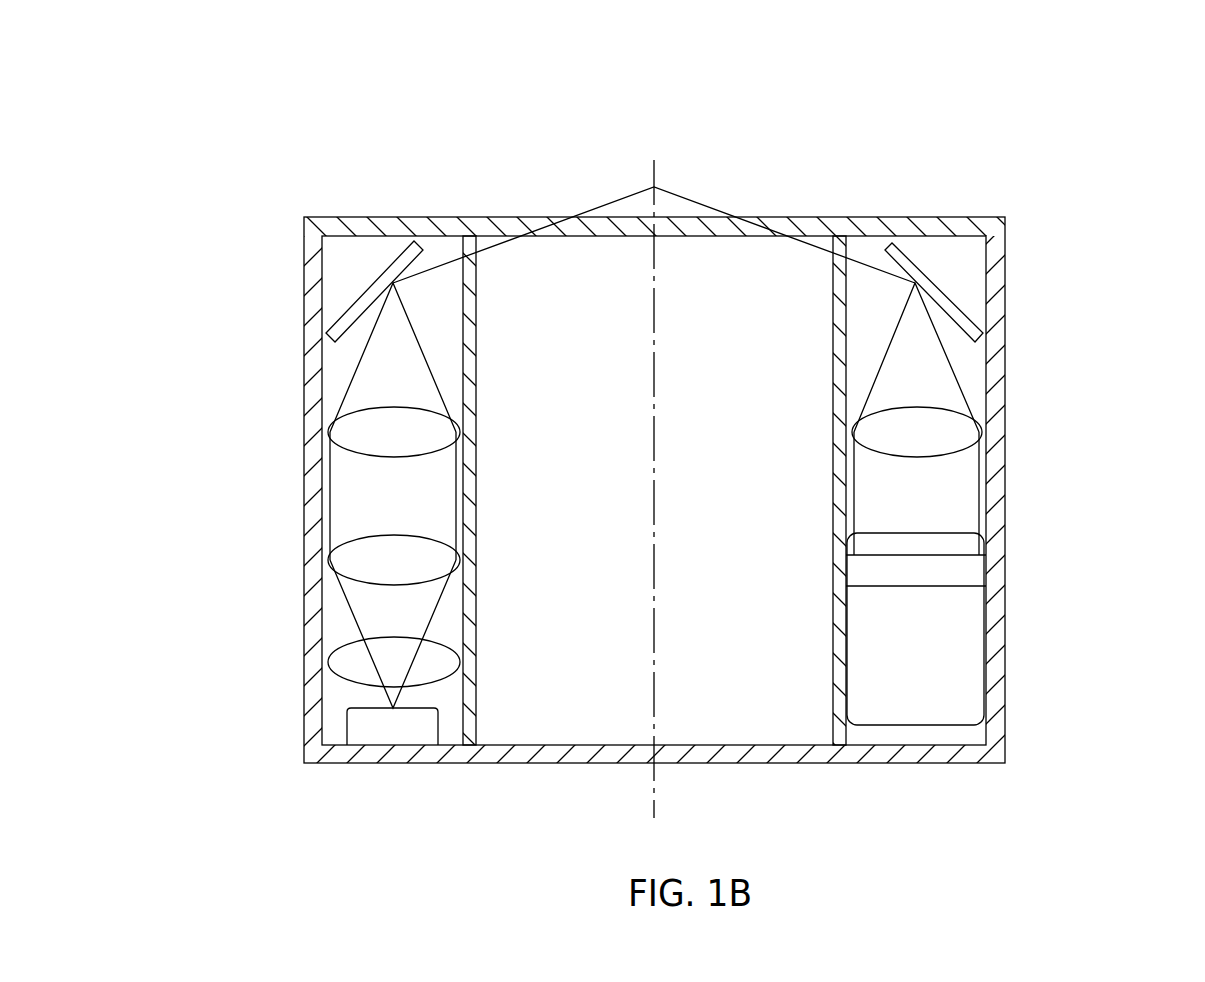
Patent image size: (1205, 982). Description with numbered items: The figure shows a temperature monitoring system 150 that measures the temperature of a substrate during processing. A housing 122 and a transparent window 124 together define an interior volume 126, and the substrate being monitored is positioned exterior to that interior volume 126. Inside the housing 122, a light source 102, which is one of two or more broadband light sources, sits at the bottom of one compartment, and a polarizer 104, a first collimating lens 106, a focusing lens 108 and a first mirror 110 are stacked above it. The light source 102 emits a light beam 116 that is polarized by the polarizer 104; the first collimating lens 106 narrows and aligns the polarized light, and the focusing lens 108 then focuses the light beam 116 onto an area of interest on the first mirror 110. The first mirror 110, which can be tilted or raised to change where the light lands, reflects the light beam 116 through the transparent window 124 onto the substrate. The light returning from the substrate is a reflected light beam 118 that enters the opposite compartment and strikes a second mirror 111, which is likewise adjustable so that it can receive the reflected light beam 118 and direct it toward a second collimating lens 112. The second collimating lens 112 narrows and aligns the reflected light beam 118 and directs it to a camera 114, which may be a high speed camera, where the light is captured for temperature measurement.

The light source 102 is at (347, 728).
The polarizer 104 is at (330, 662).
The first collimating lens 106 is at (330, 560).
The focusing lens 108 is at (330, 432).
The first mirror 110 is at (371, 290).
The second mirror 111 is at (945, 256).
The second collimating lens 112 is at (984, 455).
The camera 114 is at (975, 570).
The light beam 116 is at (457, 478).
The reflected light beam 118 is at (773, 233).
The housing 122 is at (1005, 391).
The transparent window 124 is at (747, 222).
The interior volume 126 is at (756, 440).
The temperature monitoring system 150 is at (1097, 125).